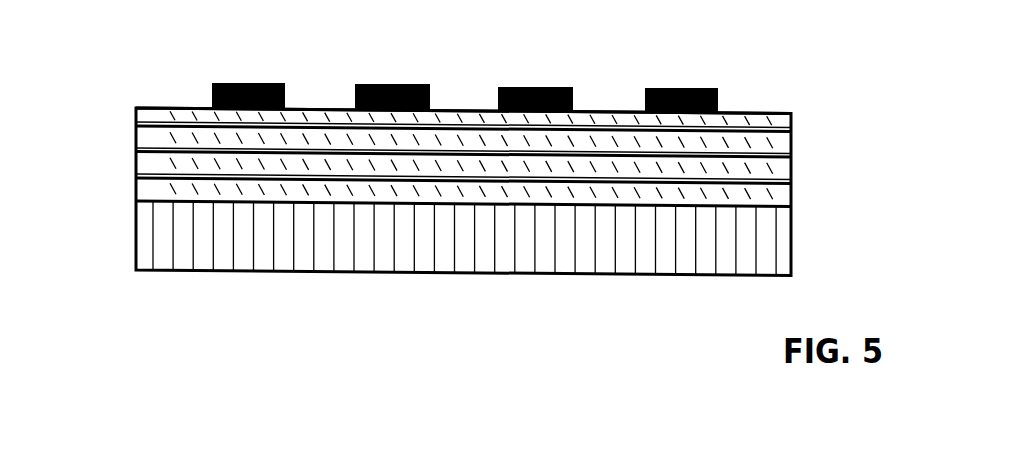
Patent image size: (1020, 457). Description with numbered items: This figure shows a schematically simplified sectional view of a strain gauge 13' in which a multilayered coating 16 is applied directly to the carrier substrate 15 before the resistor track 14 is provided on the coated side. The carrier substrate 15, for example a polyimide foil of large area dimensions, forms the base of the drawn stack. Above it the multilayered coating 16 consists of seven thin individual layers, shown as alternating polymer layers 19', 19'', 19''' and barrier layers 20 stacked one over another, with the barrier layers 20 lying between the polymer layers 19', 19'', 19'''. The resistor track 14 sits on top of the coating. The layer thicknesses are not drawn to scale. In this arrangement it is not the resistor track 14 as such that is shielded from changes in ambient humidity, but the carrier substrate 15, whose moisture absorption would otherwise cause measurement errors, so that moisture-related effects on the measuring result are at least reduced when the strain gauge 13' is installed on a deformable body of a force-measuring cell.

The strain gauge 13' is at (463, 231).
The resistor track 14 is at (648, 88).
The carrier substrate 15 is at (152, 218).
The multilayered coating 16 is at (743, 111).
The polymer layer 19' is at (399, 214).
The polymer layer 19'' is at (399, 138).
The polymer layer 19''' is at (436, 91).
The barrier layers 20 is at (148, 125).